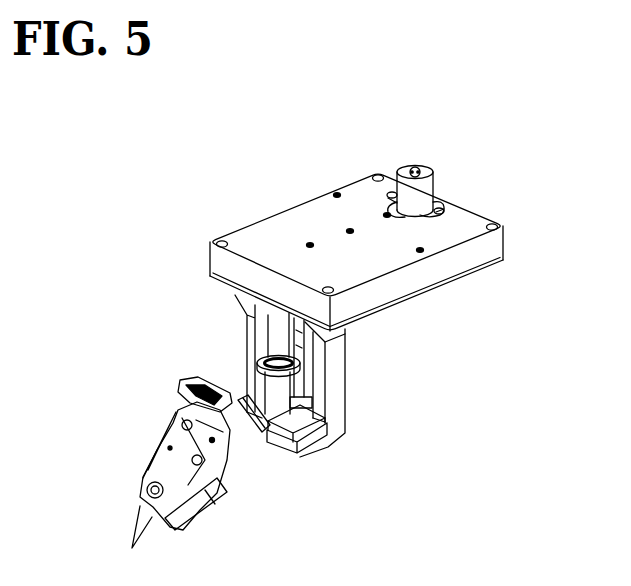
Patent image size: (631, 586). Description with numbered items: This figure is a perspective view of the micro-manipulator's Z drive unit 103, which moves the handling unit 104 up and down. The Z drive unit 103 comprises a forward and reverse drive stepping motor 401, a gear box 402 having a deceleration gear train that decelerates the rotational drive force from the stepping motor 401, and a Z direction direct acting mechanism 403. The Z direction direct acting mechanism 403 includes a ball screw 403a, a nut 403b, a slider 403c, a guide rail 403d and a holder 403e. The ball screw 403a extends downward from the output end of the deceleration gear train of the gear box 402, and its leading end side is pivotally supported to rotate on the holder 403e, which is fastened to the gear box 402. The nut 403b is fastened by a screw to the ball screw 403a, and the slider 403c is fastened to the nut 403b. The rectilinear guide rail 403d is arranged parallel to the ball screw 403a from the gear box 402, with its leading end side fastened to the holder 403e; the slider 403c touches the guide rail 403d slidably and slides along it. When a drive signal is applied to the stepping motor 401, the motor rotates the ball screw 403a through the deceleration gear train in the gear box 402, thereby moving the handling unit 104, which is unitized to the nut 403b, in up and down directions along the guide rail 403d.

The Z drive unit 103 is at (387, 112).
The handling unit 104 is at (112, 515).
The forward and reverse drive stepping motor 401 is at (438, 183).
The gear box 402 is at (315, 220).
The Z direction direct acting mechanism 403 is at (169, 334).
The ball screw 403a is at (272, 337).
The nut 403b is at (268, 444).
The slider 403c is at (325, 420).
The guide rail 403d is at (328, 365).
The holder 403e is at (250, 333).